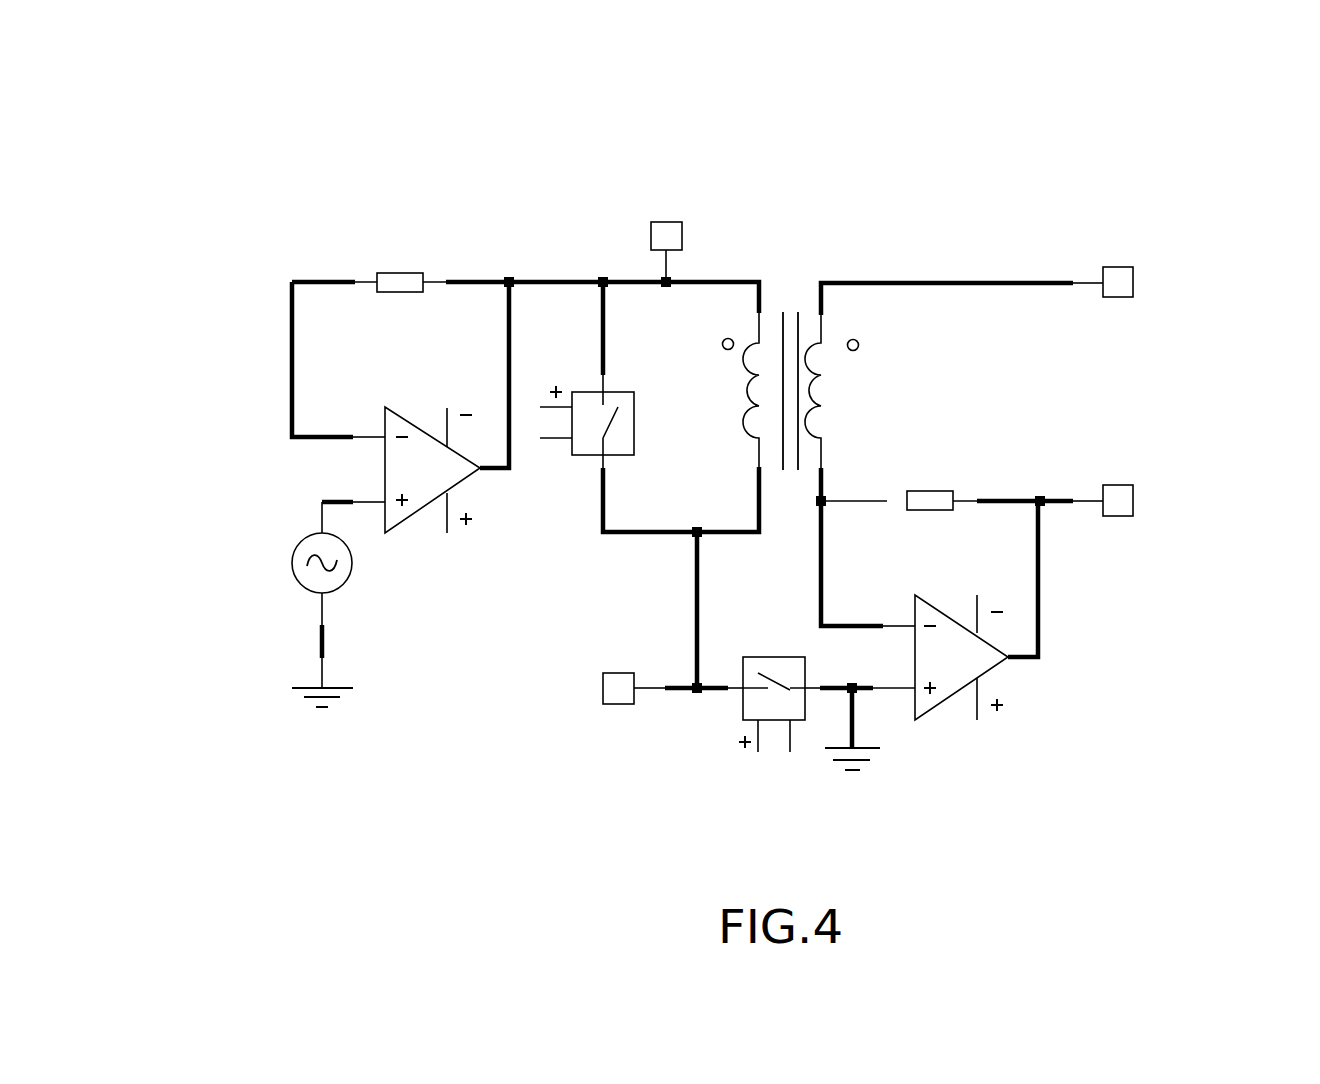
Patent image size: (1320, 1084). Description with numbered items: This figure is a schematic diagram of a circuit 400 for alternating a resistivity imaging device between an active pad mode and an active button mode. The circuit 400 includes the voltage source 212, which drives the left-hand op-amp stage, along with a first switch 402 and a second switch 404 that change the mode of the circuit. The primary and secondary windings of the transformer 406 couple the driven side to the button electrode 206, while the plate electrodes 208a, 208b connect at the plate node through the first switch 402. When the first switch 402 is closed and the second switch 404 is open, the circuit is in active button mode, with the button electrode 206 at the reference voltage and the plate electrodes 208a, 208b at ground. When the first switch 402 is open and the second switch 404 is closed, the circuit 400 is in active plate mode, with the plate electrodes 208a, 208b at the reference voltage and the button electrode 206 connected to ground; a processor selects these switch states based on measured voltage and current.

The circuit 400 is at (270, 168).
The transformer 406 is at (821, 262).
The button electrode 206 is at (1120, 267).
The second switch 404 is at (587, 392).
The voltage source 212 is at (302, 537).
The plate electrode 208a is at (611, 733).
The plate electrode 208b is at (617, 695).
The first switch 402 is at (798, 722).